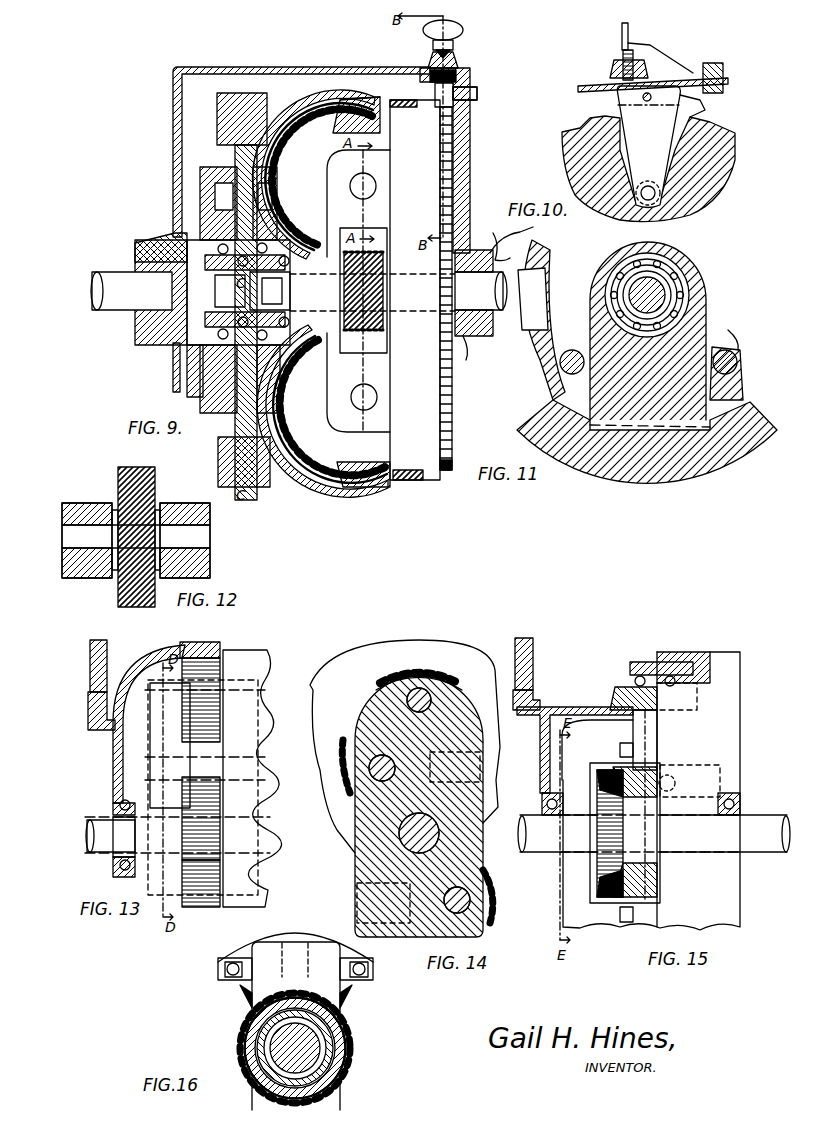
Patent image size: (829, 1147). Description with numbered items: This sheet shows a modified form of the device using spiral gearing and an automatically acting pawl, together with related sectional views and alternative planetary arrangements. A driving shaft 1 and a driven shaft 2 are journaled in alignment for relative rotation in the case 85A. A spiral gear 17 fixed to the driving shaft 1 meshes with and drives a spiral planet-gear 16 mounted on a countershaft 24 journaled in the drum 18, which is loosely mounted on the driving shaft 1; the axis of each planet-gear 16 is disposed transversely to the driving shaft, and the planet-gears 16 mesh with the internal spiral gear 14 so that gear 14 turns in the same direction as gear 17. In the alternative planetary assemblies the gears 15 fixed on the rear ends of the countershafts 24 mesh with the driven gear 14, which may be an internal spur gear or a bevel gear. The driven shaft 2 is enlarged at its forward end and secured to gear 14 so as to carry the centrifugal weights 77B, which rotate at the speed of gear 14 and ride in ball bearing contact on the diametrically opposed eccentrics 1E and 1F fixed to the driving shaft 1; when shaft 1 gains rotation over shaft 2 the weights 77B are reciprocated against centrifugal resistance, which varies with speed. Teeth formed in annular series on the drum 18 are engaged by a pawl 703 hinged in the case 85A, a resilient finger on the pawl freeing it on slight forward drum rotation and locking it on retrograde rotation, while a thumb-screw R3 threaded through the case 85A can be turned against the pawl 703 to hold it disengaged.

In FIG. 9, the driving shaft 1 is at (299, 300).
In FIG. 11, the driving shaft 1 is at (632, 283).
In FIG. 13, the driving shaft 1 is at (287, 858).
In FIG. 14, the driving shaft 1 is at (400, 848).
In FIG. 15, the driving shaft 1 is at (535, 855).
In FIG. 16, the driving shaft 1 is at (285, 1048).
In FIG. 9, the eccentric 1E is at (275, 280).
In FIG. 9, the eccentric 1F is at (256, 290).
In FIG. 11, the eccentric 1F is at (622, 300).
In FIG. 9, the driven shaft 2 is at (125, 300).
In FIG. 9, the internal spiral gear 14 is at (340, 97).
In FIG. 13, the internal spiral gear 14 is at (222, 645).
In FIG. 15, the internal spiral gear 14 is at (613, 695).
In FIG. 13, the gear 15 is at (222, 676).
In FIG. 14, the gear 15 is at (448, 668).
In FIG. 15, the gear 15 is at (638, 670).
In FIG. 9, the spiral planet-gear 16 is at (307, 118).
In FIG. 12, the spiral planet-gear 16 is at (157, 481).
In FIG. 13, the spiral planet-gear 16 is at (222, 890).
In FIG. 14, the spiral planet-gear 16 is at (345, 750).
In FIG. 15, the spiral planet-gear 16 is at (615, 768).
In FIG. 16, the spiral planet-gear 16 is at (240, 1000).
In FIG. 9, the spiral gear 17 is at (385, 280).
In FIG. 13, the spiral gear 17 is at (222, 840).
In FIG. 15, the spiral gear 17 is at (597, 770).
In FIG. 16, the spiral gear 17 is at (248, 1028).
In FIG. 9, the drum 18 is at (462, 212).
In FIG. 10, the drum 18 is at (562, 158).
In FIG. 12, the drum 18 is at (212, 557).
In FIG. 13, the drum 18 is at (268, 666).
In FIG. 14, the drum 18 is at (315, 683).
In FIG. 15, the drum 18 is at (660, 656).
In FIG. 9, the countershaft 24 is at (376, 186).
In FIG. 12, the countershaft 24 is at (205, 535).
In FIG. 13, the countershaft 24 is at (262, 750).
In FIG. 14, the countershaft 24 is at (407, 702).
In FIG. 15, the countershaft 24 is at (670, 728).
In FIG. 16, the countershaft 24 is at (300, 932).
In FIG. 9, the centrifugal weight 77B is at (218, 455).
In FIG. 11, the centrifugal weight 77B is at (550, 405).
In FIG. 13, the centrifugal weight 77B is at (107, 652).
In FIG. 15, the centrifugal weight 77B is at (535, 648).
In FIG. 9, the case 85A is at (458, 73).
In FIG. 10, the case 85A is at (600, 72).
In FIG. 9, the pawl 703 is at (470, 97).
In FIG. 10, the pawl 703 is at (610, 88).
In FIG. 9, the thumb-screw R3 is at (464, 27).
In FIG. 10, the thumb-screw R3 is at (621, 32).